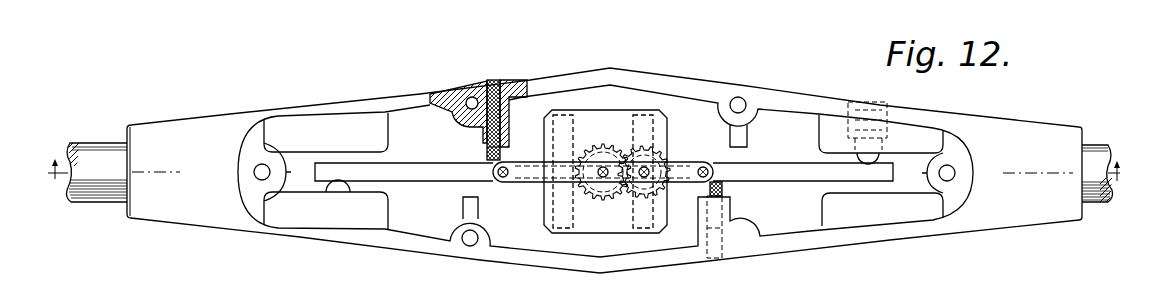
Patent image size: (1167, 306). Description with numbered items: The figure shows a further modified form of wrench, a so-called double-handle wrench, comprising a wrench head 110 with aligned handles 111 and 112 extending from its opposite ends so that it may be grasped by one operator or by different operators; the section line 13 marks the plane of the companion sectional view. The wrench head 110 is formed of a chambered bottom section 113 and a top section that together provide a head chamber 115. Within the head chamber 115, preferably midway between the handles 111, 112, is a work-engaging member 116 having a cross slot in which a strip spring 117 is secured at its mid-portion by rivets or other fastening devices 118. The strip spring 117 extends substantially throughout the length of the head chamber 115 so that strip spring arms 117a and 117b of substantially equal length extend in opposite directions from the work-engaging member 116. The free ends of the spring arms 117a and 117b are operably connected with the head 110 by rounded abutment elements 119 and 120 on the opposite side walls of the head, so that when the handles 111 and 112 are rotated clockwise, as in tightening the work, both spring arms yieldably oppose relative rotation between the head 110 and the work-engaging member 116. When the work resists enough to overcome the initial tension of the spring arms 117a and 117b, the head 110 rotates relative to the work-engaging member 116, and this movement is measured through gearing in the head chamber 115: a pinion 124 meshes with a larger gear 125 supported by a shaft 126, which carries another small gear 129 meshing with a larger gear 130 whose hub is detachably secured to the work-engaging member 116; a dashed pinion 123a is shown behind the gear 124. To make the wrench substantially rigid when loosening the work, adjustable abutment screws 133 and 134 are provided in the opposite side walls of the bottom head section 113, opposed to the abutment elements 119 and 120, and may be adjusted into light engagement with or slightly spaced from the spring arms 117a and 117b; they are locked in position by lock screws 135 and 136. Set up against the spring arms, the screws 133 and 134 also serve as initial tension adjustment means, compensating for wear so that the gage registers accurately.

The wrench head 110 is at (711, 76).
The handle 111 is at (1095, 145).
The handle 112 is at (103, 140).
The chambered bottom section 113 is at (382, 97).
The head chamber 115 is at (787, 120).
The work-engaging member 116 is at (608, 110).
The strip spring 117 is at (604, 179).
The strip spring arm 117a is at (746, 161).
The strip spring arm 117b is at (463, 173).
The rivets 118 is at (643, 110).
The rounded abutment element 119 is at (871, 161).
The rounded abutment element 120 is at (338, 183).
The pinion 123a is at (596, 151).
The pinion 124 is at (608, 198).
The larger gear 125 is at (649, 150).
The shaft 126 is at (648, 170).
The small gear 129 is at (697, 197).
The larger gear 130 is at (597, 193).
The adjustable abutment screw 133 is at (722, 190).
The adjustable abutment screw 134 is at (482, 153).
The lock screw 135 is at (716, 247).
The lock screw 136 is at (489, 80).
The section line 13- 13 is at (585, 171).